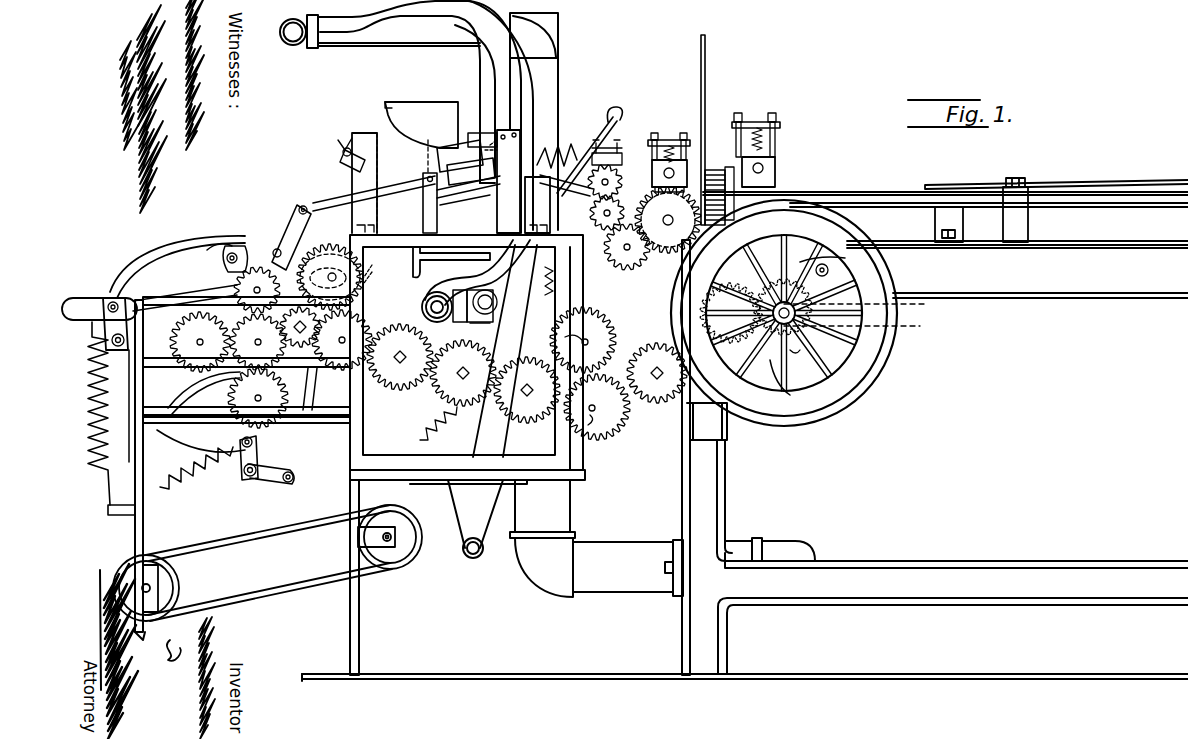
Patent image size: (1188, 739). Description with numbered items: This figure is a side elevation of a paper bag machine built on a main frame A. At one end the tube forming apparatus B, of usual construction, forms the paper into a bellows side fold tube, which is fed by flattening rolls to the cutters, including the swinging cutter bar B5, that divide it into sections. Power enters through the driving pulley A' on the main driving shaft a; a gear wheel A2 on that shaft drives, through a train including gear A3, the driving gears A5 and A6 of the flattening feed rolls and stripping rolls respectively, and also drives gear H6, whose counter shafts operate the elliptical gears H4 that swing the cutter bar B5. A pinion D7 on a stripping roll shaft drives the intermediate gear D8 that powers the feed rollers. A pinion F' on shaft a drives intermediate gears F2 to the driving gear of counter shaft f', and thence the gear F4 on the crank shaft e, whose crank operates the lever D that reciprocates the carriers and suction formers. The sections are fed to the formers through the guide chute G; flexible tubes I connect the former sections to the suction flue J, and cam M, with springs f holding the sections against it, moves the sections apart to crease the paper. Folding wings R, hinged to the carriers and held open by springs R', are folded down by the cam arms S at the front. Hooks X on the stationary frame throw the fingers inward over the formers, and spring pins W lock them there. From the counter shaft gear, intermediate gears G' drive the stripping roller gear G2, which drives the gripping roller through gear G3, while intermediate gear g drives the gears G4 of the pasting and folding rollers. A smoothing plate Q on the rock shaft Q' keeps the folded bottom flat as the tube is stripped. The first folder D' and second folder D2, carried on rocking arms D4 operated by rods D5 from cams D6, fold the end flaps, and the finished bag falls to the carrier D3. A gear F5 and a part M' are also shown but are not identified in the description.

The main frame A is at (745, 458).
The driving pulley A' is at (796, 313).
The gear wheel A2 is at (862, 329).
The train gear A3 is at (783, 380).
The main driving shaft a is at (797, 359).
The driving gear A5 is at (652, 188).
The driving gear A6 is at (780, 190).
The tube forming apparatus B is at (936, 181).
The swinging cutter bar B5 is at (706, 80).
The lever D is at (478, 351).
The first folder D' is at (153, 347).
The second folder D2 is at (195, 395).
The carrier D3 is at (248, 540).
The rocking arms D4 is at (142, 260).
The rods D5 is at (178, 295).
The cams D6 is at (380, 276).
The pinion D7 is at (635, 268).
The intermediate gear D8 is at (652, 228).
The pinion F' is at (862, 305).
The intermediate gears F2 is at (660, 340).
The gear F4 is at (580, 320).
The gear wheel F5 is at (597, 407).
The springs f is at (579, 150).
The counter shaft f' is at (587, 424).
The crank shaft e is at (572, 337).
The guide chute G is at (537, 205).
The intermediate gears G' is at (463, 373).
The driving gear G2 is at (342, 340).
The gear G3 is at (365, 262).
The roller gears G4 is at (229, 347).
The intermediate gear g is at (305, 327).
The elliptical gears H4 is at (714, 170).
The gear H6 is at (848, 258).
The flexible tubes I is at (460, 240).
The suction flue J is at (562, 66).
The cam M is at (421, 125).
The curved feed arm M' is at (471, 227).
The smoothing plate Q is at (353, 223).
The rock shaft Q' is at (238, 243).
The folding wings R is at (460, 156).
The springs R' is at (468, 181).
The cam arms S is at (398, 182).
The spring pins W is at (348, 150).
The hooks X is at (498, 180).